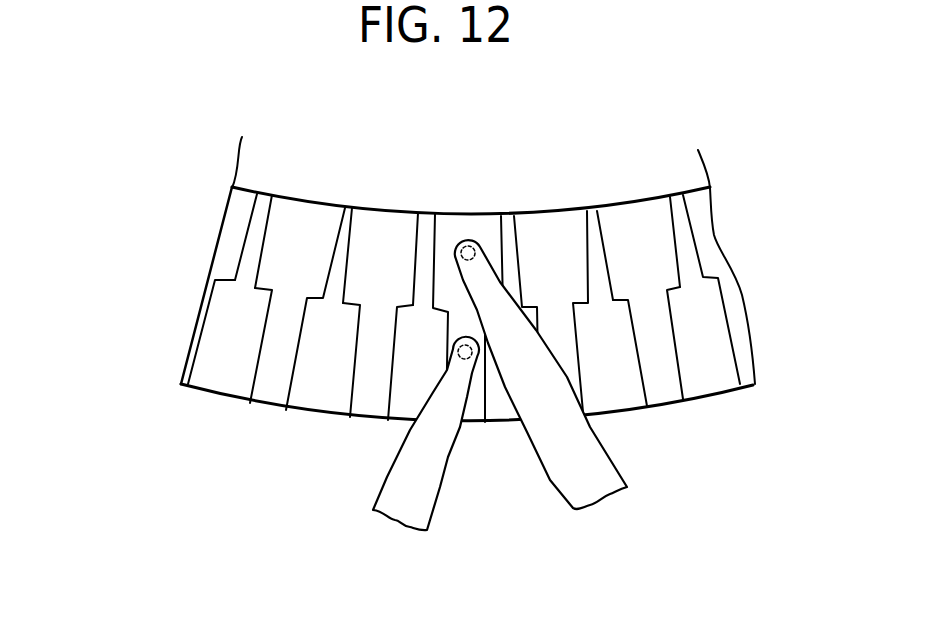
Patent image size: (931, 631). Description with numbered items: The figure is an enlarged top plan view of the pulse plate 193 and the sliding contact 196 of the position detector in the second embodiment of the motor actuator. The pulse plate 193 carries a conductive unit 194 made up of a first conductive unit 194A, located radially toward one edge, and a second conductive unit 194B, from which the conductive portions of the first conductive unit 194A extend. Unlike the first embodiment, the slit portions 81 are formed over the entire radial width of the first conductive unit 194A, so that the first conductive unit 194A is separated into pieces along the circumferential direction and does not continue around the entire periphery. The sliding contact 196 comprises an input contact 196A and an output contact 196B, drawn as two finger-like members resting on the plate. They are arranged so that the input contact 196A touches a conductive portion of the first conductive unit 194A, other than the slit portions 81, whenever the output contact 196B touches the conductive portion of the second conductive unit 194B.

The slit portions 81 is at (420, 220).
The pulse plate 193 is at (412, 276).
The conductive unit 194 is at (398, 299).
The first conductive unit 194A is at (222, 177).
The second conductive unit 194B is at (189, 338).
The sliding contact 196 is at (500, 415).
The input contact 196A is at (558, 480).
The output contact 196B is at (430, 440).